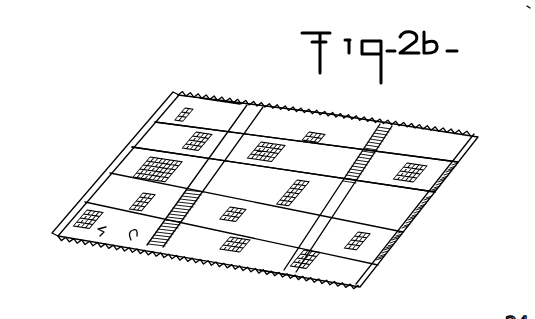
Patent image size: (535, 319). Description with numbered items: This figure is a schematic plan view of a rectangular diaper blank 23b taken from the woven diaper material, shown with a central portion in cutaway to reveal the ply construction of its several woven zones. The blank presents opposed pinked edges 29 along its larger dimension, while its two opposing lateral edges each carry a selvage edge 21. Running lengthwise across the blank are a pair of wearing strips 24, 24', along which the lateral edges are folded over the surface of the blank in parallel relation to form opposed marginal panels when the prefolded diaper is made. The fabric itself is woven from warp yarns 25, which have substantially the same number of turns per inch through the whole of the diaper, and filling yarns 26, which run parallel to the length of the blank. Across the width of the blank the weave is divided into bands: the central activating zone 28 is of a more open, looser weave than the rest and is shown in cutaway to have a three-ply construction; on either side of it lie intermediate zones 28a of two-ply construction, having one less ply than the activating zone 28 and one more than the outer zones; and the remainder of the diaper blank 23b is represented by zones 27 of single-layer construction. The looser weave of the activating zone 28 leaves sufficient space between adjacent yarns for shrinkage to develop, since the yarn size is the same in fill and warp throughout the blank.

The selvage edge 21 is at (173, 92).
The diaper blank 23b is at (440, 149).
The wearing strip 24 is at (349, 181).
The wearing strip 24' is at (219, 159).
The warp yarns 25 is at (131, 240).
The filling yarns 26 is at (100, 236).
The zones of remainder 27 is at (173, 92).
The activating zone 28 is at (433, 193).
The intermediate zones 28a is at (149, 120).
The pinked edges 29 is at (217, 97).